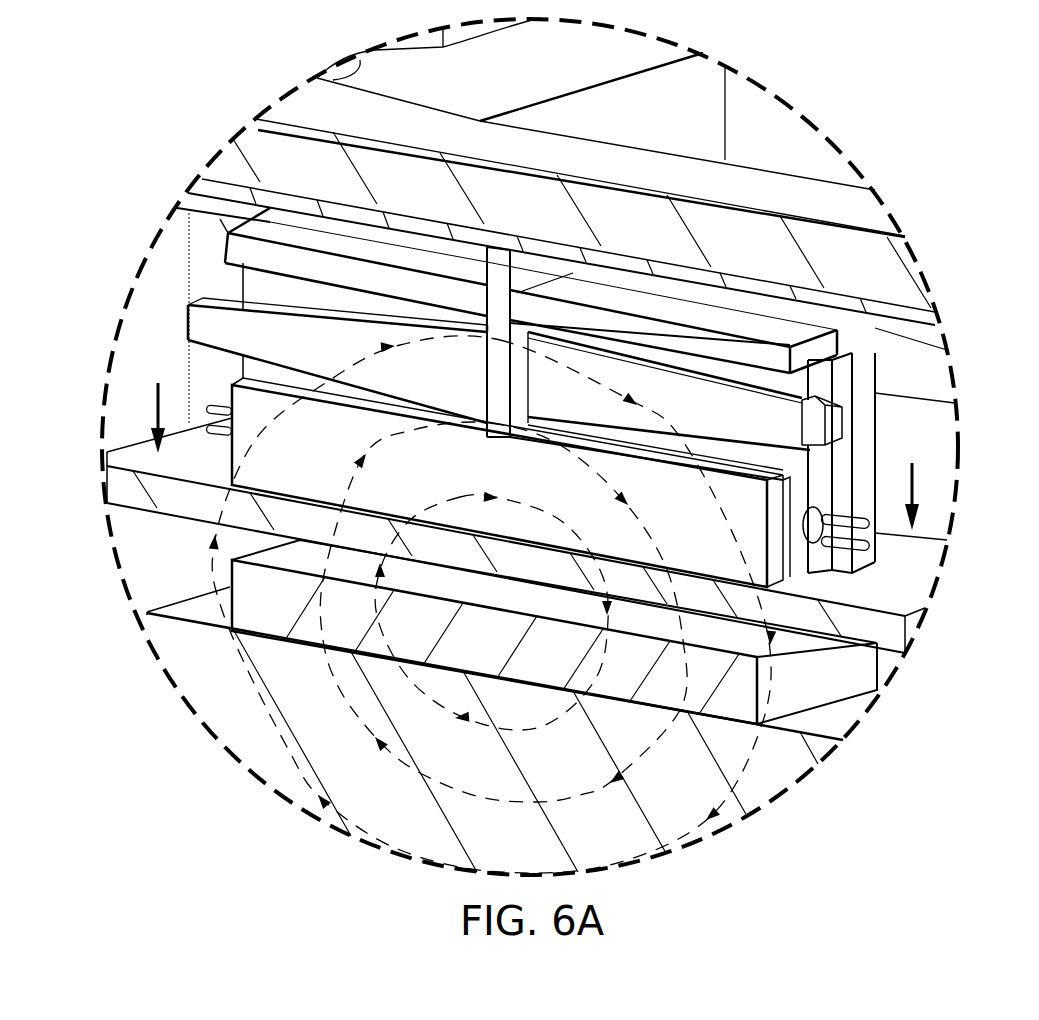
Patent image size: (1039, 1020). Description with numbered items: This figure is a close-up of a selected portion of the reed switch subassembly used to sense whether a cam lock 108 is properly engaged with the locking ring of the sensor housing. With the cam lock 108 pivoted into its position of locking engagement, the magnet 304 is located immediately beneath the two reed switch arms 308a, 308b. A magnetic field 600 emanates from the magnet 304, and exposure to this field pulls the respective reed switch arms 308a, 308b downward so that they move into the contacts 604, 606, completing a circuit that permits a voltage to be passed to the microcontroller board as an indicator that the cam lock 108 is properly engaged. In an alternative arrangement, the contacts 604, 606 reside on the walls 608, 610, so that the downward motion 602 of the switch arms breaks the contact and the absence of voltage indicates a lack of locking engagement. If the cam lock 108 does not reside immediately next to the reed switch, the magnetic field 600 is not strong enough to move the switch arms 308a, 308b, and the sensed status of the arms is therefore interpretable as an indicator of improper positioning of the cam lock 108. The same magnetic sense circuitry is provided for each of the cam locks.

The cam lock 108 is at (222, 716).
The magnet 304 is at (825, 683).
The reed switch arm 308a is at (212, 322).
The reed switch arm 308b is at (718, 405).
The magnetic field 600 is at (430, 455).
The downward motion 602 is at (154, 412).
The contact 604 is at (240, 367).
The contact 606 is at (797, 452).
The wall 608 is at (398, 282).
The wall 610 is at (612, 330).